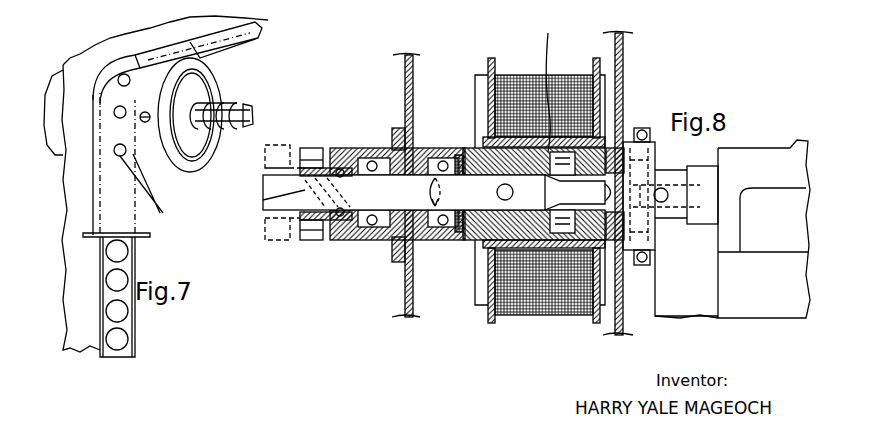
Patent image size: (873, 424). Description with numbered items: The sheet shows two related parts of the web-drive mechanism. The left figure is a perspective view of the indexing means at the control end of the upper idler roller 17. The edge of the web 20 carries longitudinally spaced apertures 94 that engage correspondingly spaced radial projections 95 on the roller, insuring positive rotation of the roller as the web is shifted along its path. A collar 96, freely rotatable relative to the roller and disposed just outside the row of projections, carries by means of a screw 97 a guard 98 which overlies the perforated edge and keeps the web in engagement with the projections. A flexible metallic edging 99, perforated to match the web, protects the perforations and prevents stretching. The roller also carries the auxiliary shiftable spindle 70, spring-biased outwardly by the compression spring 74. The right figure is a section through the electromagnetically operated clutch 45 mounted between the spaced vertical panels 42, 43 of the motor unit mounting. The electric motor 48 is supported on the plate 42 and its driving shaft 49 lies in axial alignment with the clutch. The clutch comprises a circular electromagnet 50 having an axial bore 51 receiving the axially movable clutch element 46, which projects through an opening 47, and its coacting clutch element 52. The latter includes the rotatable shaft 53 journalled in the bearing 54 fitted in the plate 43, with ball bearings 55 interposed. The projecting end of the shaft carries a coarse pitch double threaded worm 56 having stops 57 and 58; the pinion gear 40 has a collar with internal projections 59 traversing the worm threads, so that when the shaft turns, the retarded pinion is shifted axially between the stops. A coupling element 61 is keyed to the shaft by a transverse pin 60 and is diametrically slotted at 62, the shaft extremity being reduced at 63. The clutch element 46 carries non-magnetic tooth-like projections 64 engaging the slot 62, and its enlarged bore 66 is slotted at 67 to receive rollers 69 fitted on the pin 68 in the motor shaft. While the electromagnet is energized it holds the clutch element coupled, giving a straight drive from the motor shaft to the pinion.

In FIG. 7, the upper idler roller 17 is at (50, 80).
In FIG. 7, the web 20 is at (70, 287).
In FIG. 8, the pinion gear 40 is at (312, 150).
In FIG. 8, the vertical panel 42 is at (623, 50).
In FIG. 8, the vertical panel 43 is at (405, 93).
In FIG. 8, the electromagnetically operated clutch 45 is at (526, 65).
In FIG. 8, the clutch element 46 is at (623, 150).
In FIG. 8, the opening 47 is at (623, 268).
In FIG. 8, the electric motor 48 is at (732, 229).
In FIG. 8, the driving shaft 49 is at (674, 176).
In FIG. 8, the electromagnet 50 is at (557, 90).
In FIG. 8, the axial bore 51 is at (483, 128).
In FIG. 8, the coacting clutch element 52 is at (488, 230).
In FIG. 8, the rotatable shaft 53 is at (393, 213).
In FIG. 8, the journalled bearing 54 is at (398, 137).
In FIG. 8, the ball bearings 55 is at (372, 160).
In FIG. 8, the coarse pitch double threaded worm 56 is at (322, 222).
In FIG. 8, the stop 57 is at (263, 200).
In FIG. 8, the stop 58 is at (352, 203).
In FIG. 8, the internal projections 59 is at (341, 169).
In FIG. 8, the transverse pin 60 is at (497, 191).
In FIG. 8, the coupling element 61 is at (508, 233).
In FIG. 8, the slot 62 is at (568, 222).
In FIG. 8, the reduced diameter portion 63 is at (553, 245).
In FIG. 8, the tooth-like projections 64 is at (497, 350).
In FIG. 8, the enlarged bore 66 is at (594, 308).
In FIG. 8, the slots 67 is at (646, 128).
In FIG. 8, the transversely extending pin 68 is at (652, 132).
In FIG. 8, the rollers 69 is at (655, 170).
In FIG. 7, the auxiliary shiftable spindle 70 is at (250, 114).
In FIG. 7, the compression spring 74 is at (234, 130).
In FIG. 7, the apertures 94 is at (118, 340).
In FIG. 7, the radial projections 95 is at (163, 213).
In FIG. 7, the collar 96 is at (205, 77).
In FIG. 7, the screw 97 is at (148, 122).
In FIG. 7, the guard 98 is at (108, 194).
In FIG. 7, the flexible metallic edging 99 is at (135, 330).